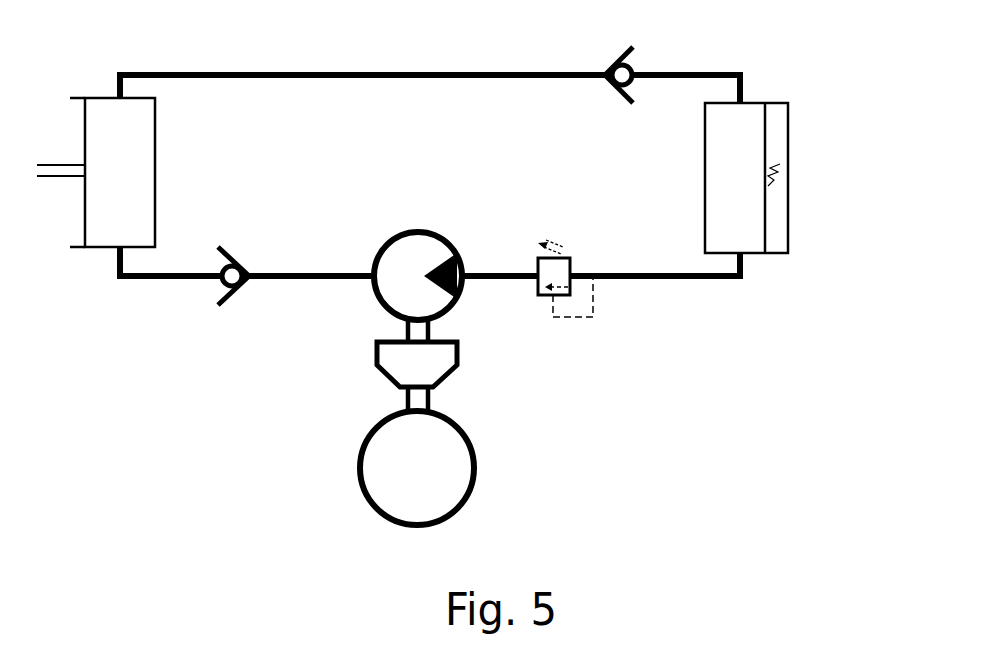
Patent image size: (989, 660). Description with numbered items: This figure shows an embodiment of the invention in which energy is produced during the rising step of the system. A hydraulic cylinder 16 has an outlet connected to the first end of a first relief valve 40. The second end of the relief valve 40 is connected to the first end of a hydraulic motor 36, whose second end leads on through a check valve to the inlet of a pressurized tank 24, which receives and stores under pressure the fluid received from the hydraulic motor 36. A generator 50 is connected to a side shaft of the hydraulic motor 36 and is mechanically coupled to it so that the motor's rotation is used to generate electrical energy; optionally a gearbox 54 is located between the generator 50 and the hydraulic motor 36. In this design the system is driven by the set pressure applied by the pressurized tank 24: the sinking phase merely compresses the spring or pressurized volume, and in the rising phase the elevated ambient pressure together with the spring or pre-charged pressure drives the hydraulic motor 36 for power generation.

The hydraulic cylinder 16 is at (176, 131).
The pressurized tank 24 is at (804, 111).
The hydraulic motor 36 is at (356, 302).
The first relief valve 40 is at (546, 228).
The generator 50 is at (491, 465).
The gearbox 54 is at (476, 358).